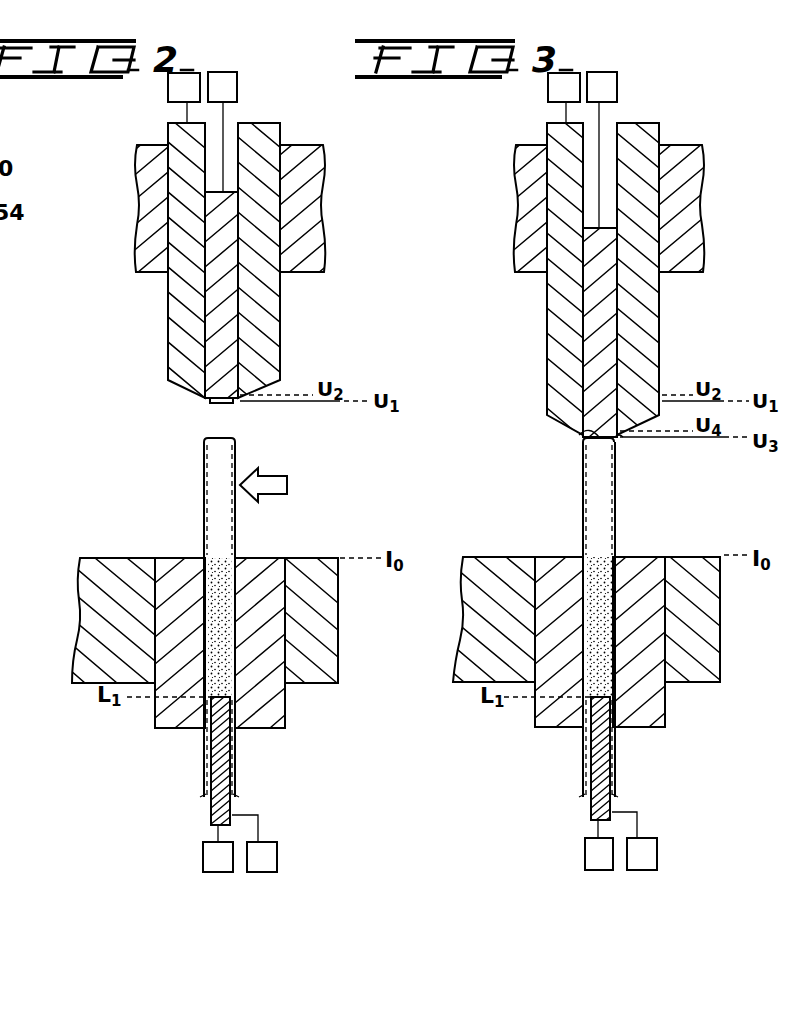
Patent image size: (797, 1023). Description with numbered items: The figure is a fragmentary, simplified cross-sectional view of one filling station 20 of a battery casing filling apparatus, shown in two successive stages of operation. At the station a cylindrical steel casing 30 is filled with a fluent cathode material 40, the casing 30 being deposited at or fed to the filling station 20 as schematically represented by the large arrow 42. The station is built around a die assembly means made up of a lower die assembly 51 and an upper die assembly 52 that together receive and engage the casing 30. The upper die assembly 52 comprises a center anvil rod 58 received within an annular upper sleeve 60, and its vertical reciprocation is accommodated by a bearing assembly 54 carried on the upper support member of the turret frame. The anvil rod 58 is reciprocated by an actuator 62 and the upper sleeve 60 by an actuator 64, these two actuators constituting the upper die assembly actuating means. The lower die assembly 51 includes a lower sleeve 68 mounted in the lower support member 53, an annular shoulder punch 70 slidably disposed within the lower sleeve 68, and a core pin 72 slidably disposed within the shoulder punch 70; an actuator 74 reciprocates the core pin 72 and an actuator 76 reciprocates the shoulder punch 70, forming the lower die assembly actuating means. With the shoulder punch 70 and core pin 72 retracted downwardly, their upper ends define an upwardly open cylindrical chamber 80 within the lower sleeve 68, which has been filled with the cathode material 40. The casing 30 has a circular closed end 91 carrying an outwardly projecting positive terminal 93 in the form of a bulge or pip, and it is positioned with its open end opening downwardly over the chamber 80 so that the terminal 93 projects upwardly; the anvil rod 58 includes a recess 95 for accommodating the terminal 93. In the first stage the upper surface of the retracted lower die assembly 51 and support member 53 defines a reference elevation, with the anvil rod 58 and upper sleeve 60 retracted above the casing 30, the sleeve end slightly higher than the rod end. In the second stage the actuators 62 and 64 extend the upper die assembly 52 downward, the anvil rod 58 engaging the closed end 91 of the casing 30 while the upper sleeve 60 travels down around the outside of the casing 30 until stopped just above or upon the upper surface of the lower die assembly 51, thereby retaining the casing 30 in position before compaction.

In FIG. 2, the filling station 20 is at (70, 326).
In FIG. 3, the filling station 20 is at (447, 285).
In FIG. 2, the casing 30 is at (200, 484).
In FIG. 3, the casing 30 is at (567, 585).
In FIG. 2, the cathode material 40 is at (215, 582).
In FIG. 3, the cathode material 40 is at (558, 559).
In FIG. 2, the large arrow 42 is at (272, 480).
In FIG. 2, the lower die assembly 51 is at (240, 734).
In FIG. 3, the lower die assembly 51 is at (634, 748).
In FIG. 2, the upper die assembly 52 is at (166, 340).
In FIG. 3, the upper die assembly 52 is at (538, 279).
In FIG. 2, the lower support member 53 is at (320, 612).
In FIG. 3, the lower support member 53 is at (613, 619).
In FIG. 2, the bearing assembly 54 is at (303, 198).
In FIG. 3, the bearing assembly 54 is at (634, 208).
In FIG. 2, the center anvil rod 58 is at (226, 306).
In FIG. 3, the center anvil rod 58 is at (653, 332).
In FIG. 2, the upper sleeve 60 is at (268, 326).
In FIG. 3, the upper sleeve 60 is at (661, 279).
In FIG. 2, the actuator 62 is at (222, 83).
In FIG. 3, the actuator 62 is at (630, 150).
In FIG. 2, the actuator 64 is at (184, 90).
In FIG. 3, the actuator 64 is at (532, 98).
In FIG. 2, the lower sleeve 68 is at (270, 692).
In FIG. 3, the lower sleeve 68 is at (630, 642).
In FIG. 2, the annular shoulder punch 70 is at (232, 772).
In FIG. 3, the annular shoulder punch 70 is at (632, 758).
In FIG. 2, the core pin 72 is at (216, 806).
In FIG. 3, the core pin 72 is at (579, 820).
In FIG. 2, the actuator 74 is at (220, 855).
In FIG. 3, the actuator 74 is at (573, 854).
In FIG. 2, the actuator 76 is at (262, 858).
In FIG. 3, the actuator 76 is at (670, 854).
In FIG. 2, the chamber 80 is at (224, 612).
In FIG. 3, the chamber 80 is at (639, 609).
In FIG. 2, the closed end 91 is at (222, 436).
In FIG. 3, the closed end 91 is at (561, 441).
In FIG. 2, the positive terminal 93 is at (220, 436).
In FIG. 2, the recess 95 is at (215, 402).